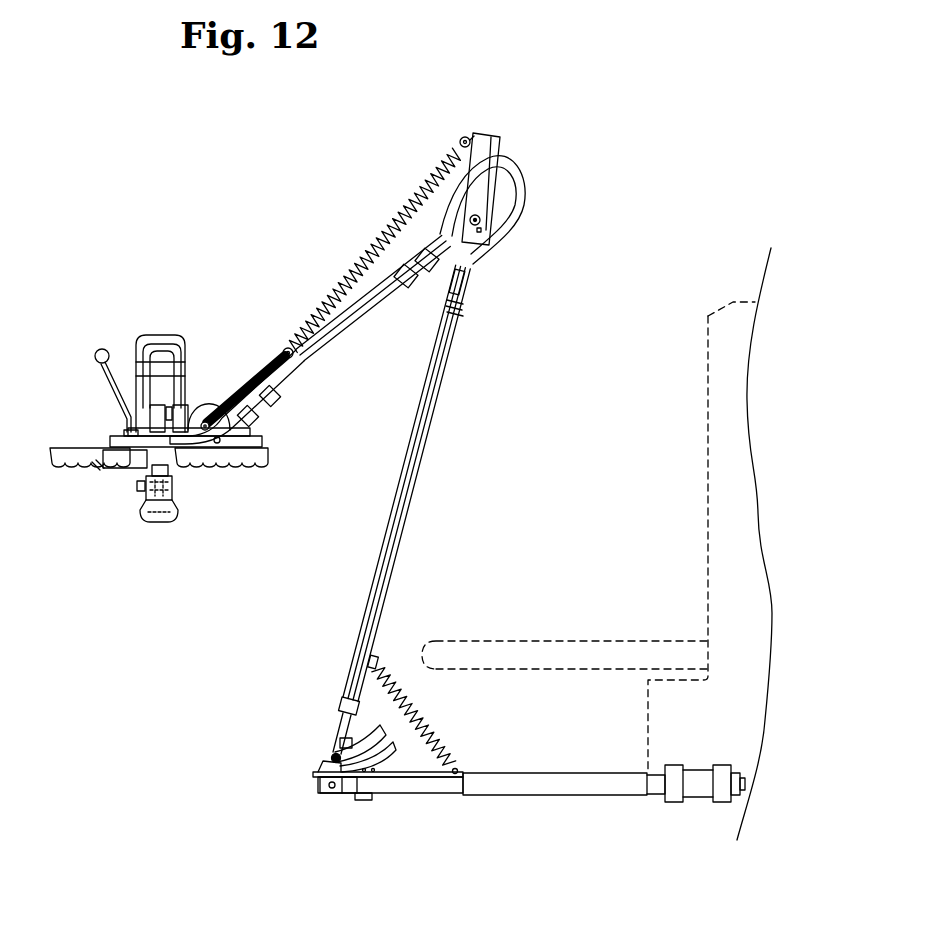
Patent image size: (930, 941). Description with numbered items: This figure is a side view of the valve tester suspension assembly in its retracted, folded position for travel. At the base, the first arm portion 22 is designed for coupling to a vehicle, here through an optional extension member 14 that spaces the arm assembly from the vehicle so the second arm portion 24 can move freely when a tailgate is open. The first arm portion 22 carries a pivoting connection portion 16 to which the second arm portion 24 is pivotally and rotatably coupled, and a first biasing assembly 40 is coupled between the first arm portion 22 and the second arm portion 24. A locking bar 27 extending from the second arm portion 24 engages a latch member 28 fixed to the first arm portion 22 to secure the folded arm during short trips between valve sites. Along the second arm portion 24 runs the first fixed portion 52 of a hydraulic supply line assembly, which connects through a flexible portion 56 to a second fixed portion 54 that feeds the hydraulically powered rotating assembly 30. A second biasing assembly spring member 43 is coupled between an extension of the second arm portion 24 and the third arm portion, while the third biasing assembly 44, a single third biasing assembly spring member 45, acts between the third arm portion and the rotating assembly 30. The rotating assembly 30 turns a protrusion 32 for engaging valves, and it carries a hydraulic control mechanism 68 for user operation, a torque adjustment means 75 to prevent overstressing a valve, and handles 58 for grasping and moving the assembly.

The extension member 14 is at (520, 795).
The connection portion 16 is at (330, 795).
The first arm portion 22 is at (415, 795).
The second arm portion 24 is at (368, 632).
The locking bar 27 is at (338, 752).
The latch member 28 is at (343, 738).
The rotating assembly 30 is at (160, 334).
The protrusion 32 is at (165, 485).
The first biasing assembly 40 is at (410, 690).
The second biasing assembly spring member 43 is at (395, 215).
The third biasing assembly 44 is at (268, 358).
The third biasing assembly spring member 45 is at (236, 392).
The first fixed portion 52 is at (412, 476).
The second fixed portion 54 is at (355, 332).
The flexible portion 56 is at (520, 178).
The handles 58 is at (80, 455).
The hydraulic control mechanism 68 is at (98, 348).
The torque adjustment means 75 is at (122, 465).